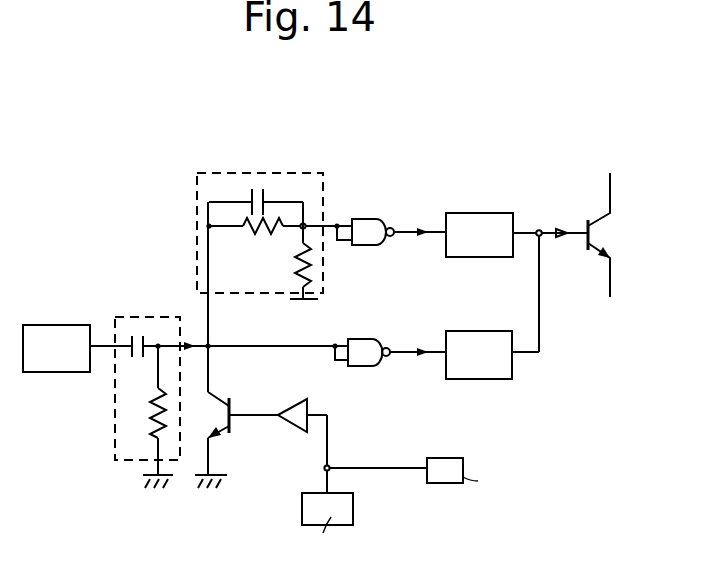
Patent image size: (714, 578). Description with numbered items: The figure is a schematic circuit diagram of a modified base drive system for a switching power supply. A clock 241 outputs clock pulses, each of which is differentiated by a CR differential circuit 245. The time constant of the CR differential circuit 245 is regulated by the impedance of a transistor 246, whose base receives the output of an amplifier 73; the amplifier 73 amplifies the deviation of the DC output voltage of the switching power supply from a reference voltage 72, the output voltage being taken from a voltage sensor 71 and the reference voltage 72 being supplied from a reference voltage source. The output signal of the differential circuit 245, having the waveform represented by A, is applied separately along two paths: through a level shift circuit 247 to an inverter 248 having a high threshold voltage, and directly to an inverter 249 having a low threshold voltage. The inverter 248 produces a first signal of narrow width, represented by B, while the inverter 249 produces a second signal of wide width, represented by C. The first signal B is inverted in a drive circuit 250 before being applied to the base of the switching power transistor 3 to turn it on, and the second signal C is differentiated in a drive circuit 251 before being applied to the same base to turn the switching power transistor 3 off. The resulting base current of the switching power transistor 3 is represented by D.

The clock 241 is at (50, 325).
The CR differential circuit 245 is at (130, 317).
The level shift circuit 247 is at (258, 173).
The inverter 248 is at (373, 212).
The inverter 249 is at (370, 368).
The drive circuit 250 is at (483, 213).
The drive circuit 251 is at (483, 380).
The switching power transistor 3 is at (610, 238).
The transistor 246 is at (235, 437).
The amplifier 73 is at (290, 400).
The reference voltage 72 is at (345, 512).
The voltage sensor 71 is at (448, 483).
The output signal waveform of the differential circuit A is at (188, 350).
The first signal B is at (420, 240).
The second signal C is at (423, 343).
The base current D is at (560, 223).